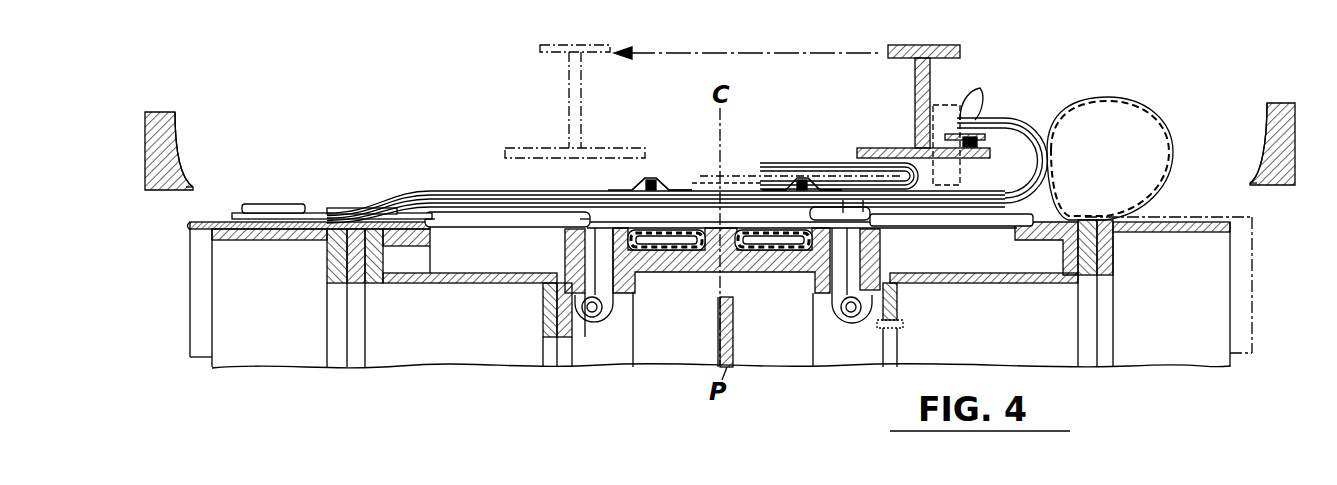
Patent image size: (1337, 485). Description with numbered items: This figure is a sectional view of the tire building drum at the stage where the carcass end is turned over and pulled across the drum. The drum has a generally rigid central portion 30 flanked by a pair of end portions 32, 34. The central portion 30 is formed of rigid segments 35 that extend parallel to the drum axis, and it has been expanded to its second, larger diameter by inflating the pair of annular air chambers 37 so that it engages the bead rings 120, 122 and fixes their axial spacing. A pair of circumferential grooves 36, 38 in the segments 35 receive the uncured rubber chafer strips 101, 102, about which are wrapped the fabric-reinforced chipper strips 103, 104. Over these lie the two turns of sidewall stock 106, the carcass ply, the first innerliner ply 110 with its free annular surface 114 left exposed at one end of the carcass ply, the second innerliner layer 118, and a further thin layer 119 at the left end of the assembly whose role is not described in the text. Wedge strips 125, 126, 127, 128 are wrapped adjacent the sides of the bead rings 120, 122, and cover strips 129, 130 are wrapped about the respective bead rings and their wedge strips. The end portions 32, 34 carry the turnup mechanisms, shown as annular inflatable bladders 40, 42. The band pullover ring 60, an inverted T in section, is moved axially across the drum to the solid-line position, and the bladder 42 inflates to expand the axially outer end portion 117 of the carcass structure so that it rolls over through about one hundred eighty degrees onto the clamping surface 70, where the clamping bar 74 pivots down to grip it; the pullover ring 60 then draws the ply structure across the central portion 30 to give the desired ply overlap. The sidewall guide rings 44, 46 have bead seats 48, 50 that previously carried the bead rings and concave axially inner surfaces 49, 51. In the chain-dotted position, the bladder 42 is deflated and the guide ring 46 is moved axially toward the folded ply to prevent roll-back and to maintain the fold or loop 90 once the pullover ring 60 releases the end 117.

The central portion 30 is at (498, 208).
The end portion 32 is at (265, 238).
The end portion 34 is at (1195, 233).
The rigid segments 35 is at (515, 217).
The groove 36 is at (563, 223).
The annular air chambers 37 is at (673, 250).
The groove 38 is at (870, 213).
The turnup mechanism 40 is at (188, 224).
The bladder 42 is at (1130, 100).
The sidewall guide ring 44 is at (163, 110).
The sidewall guide ring 46 is at (940, 103).
The bead seat 48 is at (190, 188).
The axially inner surface 49 is at (177, 143).
The bead seat 50 is at (1257, 180).
The axially inner surface 51 is at (1267, 136).
The band pullover ring 60 is at (753, 90).
The clamping surface 70 is at (990, 152).
The clamping bar 74 is at (973, 120).
The loop 90 is at (1043, 117).
The chafer strip 101 is at (575, 212).
The chafer strip 102 is at (843, 213).
The chipper strip 103 is at (592, 212).
The chipper strip 104 is at (863, 212).
The sidewall stock 106 is at (983, 208).
The first innerliner ply 110 is at (317, 211).
The free annular surface 114 is at (280, 207).
The axially outer end portion 117 is at (957, 125).
The second innerliner layer 118 is at (387, 206).
The thin bar 119 is at (258, 213).
The bead ring 120 is at (650, 185).
The bead ring 122 is at (797, 180).
The wedge strip 125 is at (638, 187).
The wedge strip 126 is at (665, 187).
The wedge strip 127 is at (777, 178).
The wedge strip 128 is at (818, 186).
The cover strip 129 is at (663, 187).
The cover strip 130 is at (800, 183).